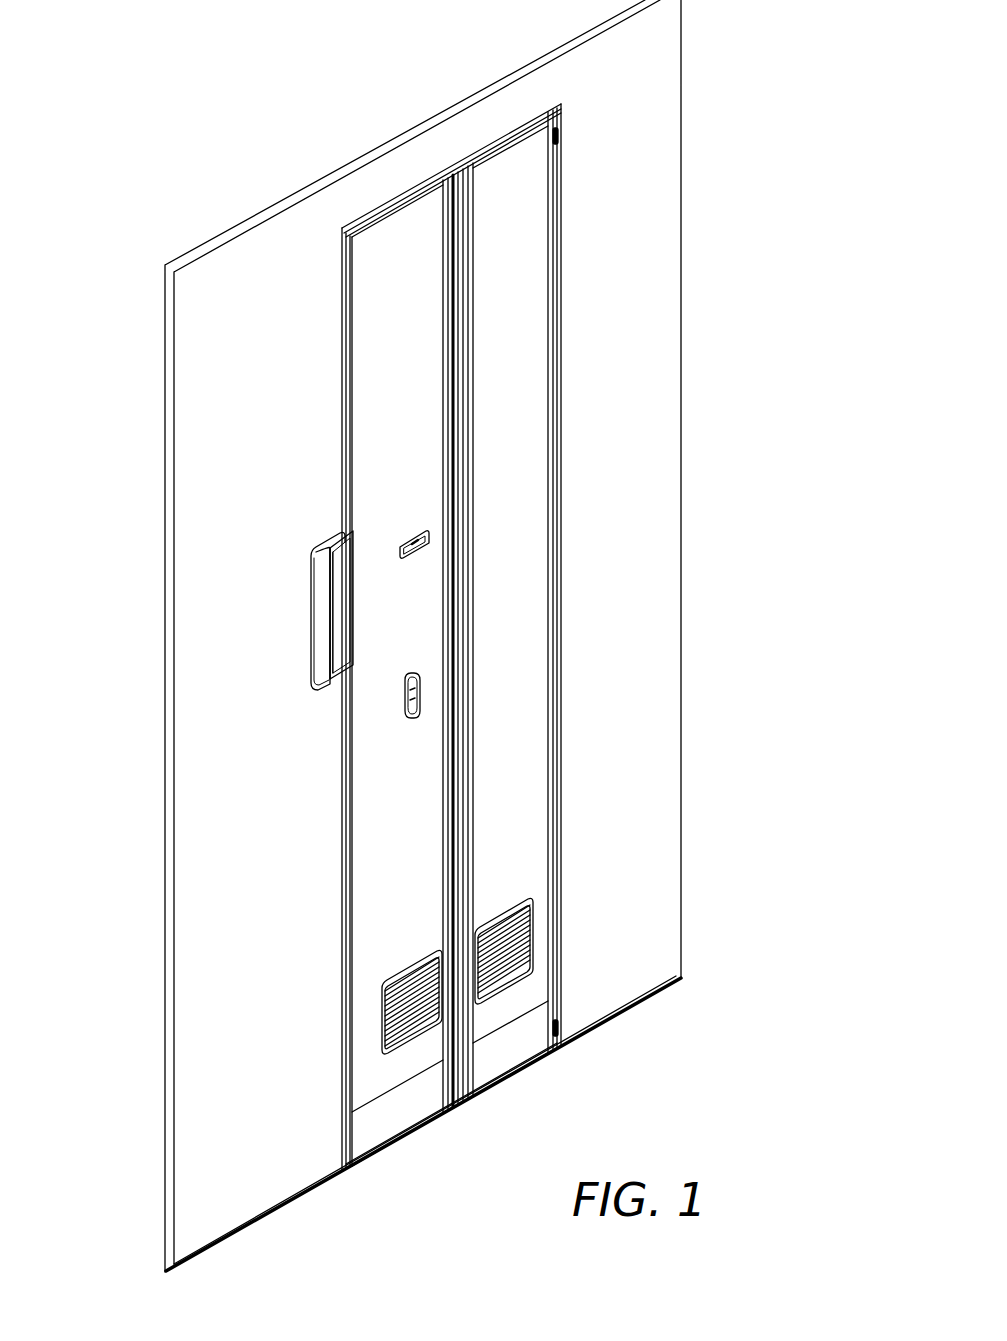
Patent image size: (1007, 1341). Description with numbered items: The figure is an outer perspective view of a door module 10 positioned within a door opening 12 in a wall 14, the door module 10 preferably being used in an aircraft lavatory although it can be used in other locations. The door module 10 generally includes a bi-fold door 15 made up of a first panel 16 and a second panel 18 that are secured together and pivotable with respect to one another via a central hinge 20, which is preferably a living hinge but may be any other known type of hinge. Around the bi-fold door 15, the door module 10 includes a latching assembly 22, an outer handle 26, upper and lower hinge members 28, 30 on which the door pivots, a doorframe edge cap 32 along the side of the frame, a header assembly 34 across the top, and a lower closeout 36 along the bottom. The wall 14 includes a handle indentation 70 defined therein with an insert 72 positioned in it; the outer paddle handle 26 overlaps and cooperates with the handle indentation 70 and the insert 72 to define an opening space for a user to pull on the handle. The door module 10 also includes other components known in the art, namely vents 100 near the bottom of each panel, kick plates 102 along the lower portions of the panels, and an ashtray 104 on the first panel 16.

The door module 10 is at (176, 138).
The door opening 12 is at (562, 164).
The wall 14 is at (650, 353).
The bi-fold door 15 is at (397, 176).
The first panel 16 is at (410, 318).
The second panel 18 is at (517, 286).
The central hinge 20 is at (468, 376).
The latching assembly 22 is at (412, 533).
The outer handle 26 is at (337, 627).
The upper hinge member 28 is at (559, 137).
The lower hinge member 30 is at (553, 1027).
The doorframe edge cap 32 is at (550, 302).
The header assembly 34 is at (517, 131).
The lower closeout 36 is at (363, 1163).
The handle indentation 70 is at (323, 540).
The insert 72 is at (323, 557).
The vents 100 is at (417, 1030).
The kick plates 102 is at (403, 1113).
The ashtray 104 is at (403, 697).